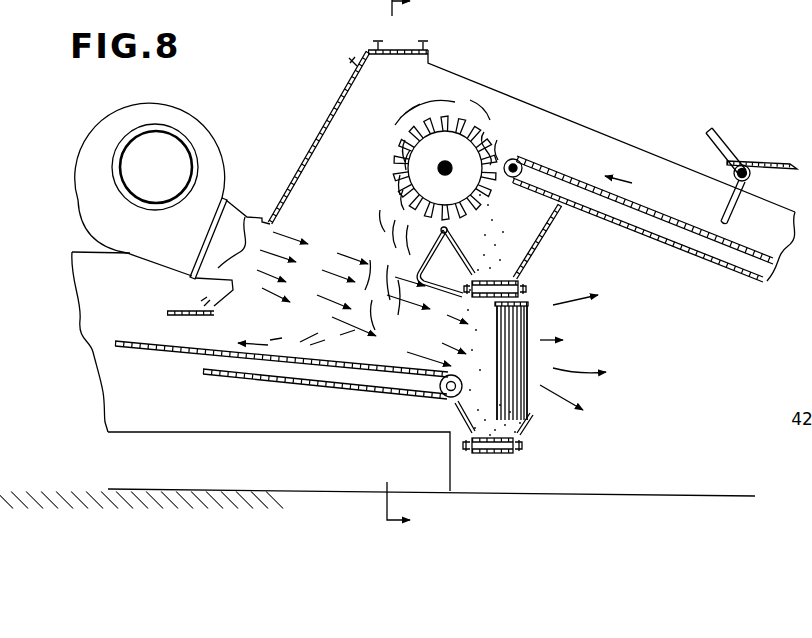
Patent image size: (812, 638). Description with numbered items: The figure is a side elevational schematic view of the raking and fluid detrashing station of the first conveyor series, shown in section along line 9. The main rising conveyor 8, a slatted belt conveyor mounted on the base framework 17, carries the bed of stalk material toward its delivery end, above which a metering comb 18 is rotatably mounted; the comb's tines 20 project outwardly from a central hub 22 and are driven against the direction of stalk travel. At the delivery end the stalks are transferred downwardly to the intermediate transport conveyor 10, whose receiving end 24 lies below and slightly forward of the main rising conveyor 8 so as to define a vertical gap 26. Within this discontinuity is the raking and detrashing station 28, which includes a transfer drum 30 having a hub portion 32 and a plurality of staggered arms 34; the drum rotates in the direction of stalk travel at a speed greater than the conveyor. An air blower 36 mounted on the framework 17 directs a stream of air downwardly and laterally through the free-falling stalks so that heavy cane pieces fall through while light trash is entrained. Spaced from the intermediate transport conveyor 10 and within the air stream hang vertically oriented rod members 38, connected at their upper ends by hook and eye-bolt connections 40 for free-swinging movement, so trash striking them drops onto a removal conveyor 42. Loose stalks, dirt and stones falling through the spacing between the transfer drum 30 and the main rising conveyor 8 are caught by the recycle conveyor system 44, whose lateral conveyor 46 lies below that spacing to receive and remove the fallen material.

The main rising conveyor 8 is at (688, 252).
The section line 9- 9 is at (407, 268).
The intermediate transport conveyor 10 is at (367, 397).
The base framework 17 is at (560, 117).
The metering comb 18 is at (726, 140).
The tines 20 is at (785, 160).
The central hub 22 is at (752, 180).
The receiving end 24 is at (407, 364).
The vertical gap 26 is at (348, 230).
The raking and detrashing station 28 is at (407, 102).
The transfer drum 30 is at (404, 147).
The hub portion 32 is at (417, 172).
The arms 34 is at (484, 133).
The air blower 36 is at (207, 118).
The rod members 38 is at (525, 388).
The hook and eye-bolt connections 40 is at (530, 306).
The removal conveyor 42 is at (508, 453).
The recycle conveyor system 44 is at (550, 238).
The lateral conveyor 46 is at (508, 280).